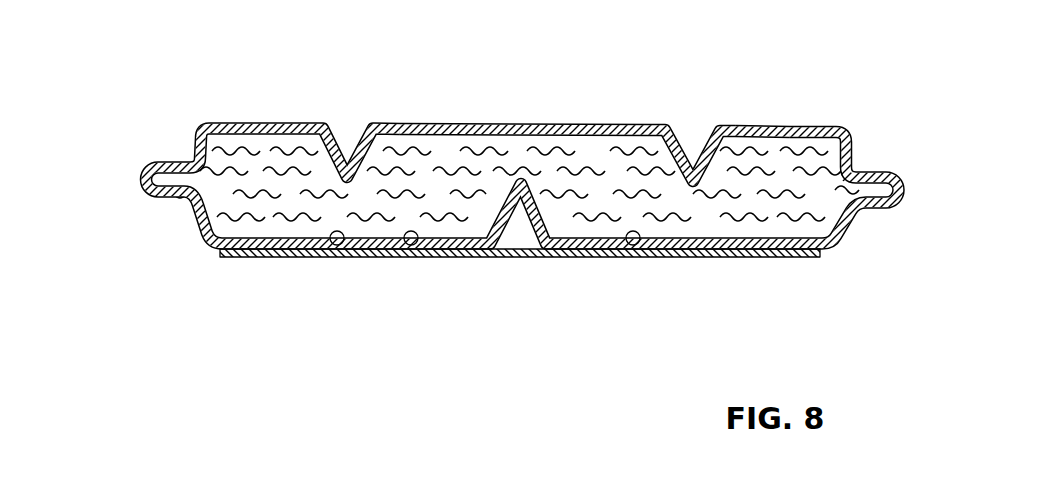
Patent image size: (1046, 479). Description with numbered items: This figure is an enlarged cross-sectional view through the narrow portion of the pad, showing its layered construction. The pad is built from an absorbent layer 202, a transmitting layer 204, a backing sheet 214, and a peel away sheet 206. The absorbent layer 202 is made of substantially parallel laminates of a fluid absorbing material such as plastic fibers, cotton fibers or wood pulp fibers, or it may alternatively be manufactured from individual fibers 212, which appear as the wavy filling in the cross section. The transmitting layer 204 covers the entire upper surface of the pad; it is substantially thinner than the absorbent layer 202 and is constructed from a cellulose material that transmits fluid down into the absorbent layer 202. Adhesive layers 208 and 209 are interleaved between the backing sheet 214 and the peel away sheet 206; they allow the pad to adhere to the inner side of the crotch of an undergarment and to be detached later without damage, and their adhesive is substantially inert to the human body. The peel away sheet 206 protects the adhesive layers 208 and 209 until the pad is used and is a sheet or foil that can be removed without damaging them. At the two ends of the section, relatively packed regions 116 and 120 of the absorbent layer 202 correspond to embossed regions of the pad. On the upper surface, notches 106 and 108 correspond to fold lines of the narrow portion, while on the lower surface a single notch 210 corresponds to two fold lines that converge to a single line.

The notch 106 is at (692, 150).
The notch 108 is at (347, 147).
The relatively packed region 116 is at (897, 190).
The relatively packed region 120 is at (147, 186).
The absorbent layer 202 is at (860, 157).
The transmitting layer 204 is at (792, 128).
The peel away sheet 206 is at (798, 260).
The adhesive layer 208 is at (627, 257).
The adhesive layer 209 is at (332, 253).
The notch 210 is at (517, 196).
The individual fibers 212 is at (475, 150).
The backing sheet 214 is at (407, 257).